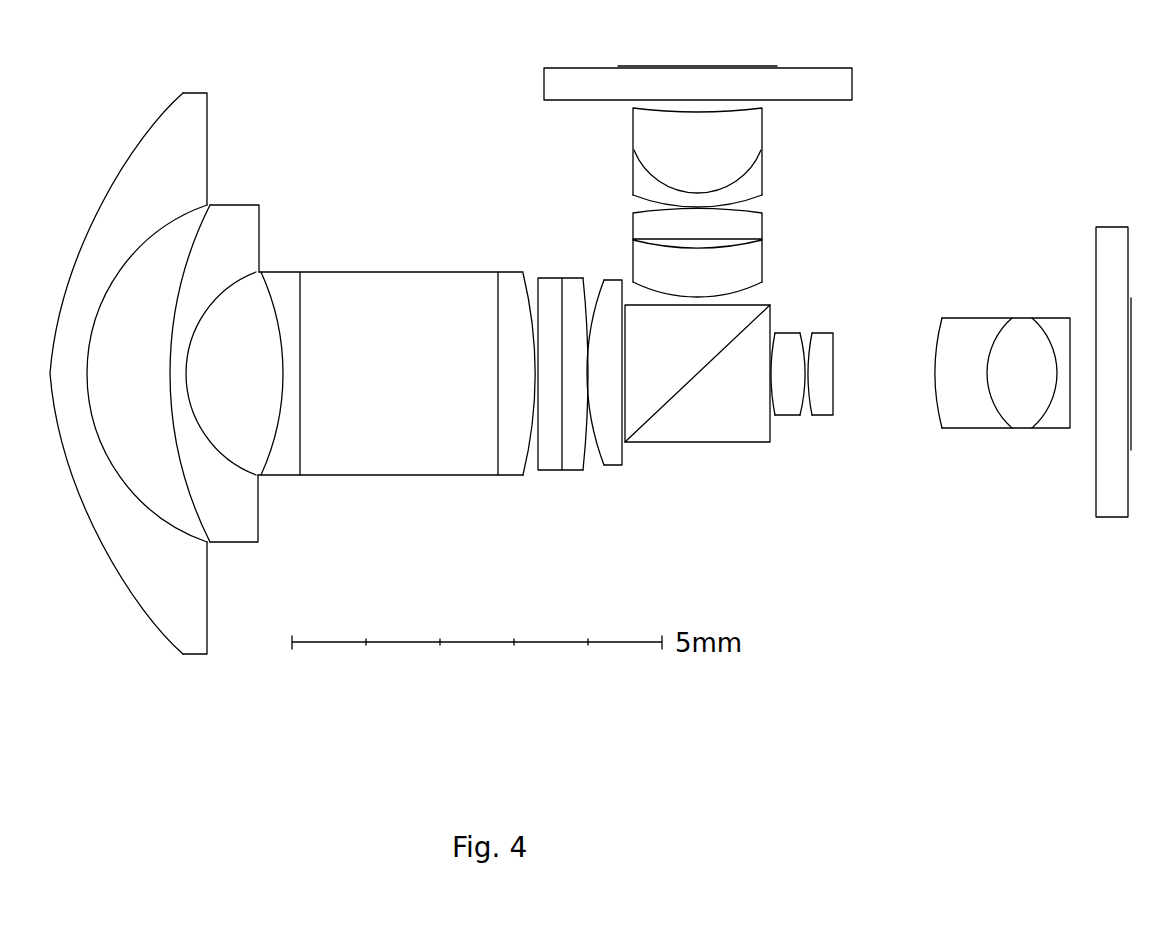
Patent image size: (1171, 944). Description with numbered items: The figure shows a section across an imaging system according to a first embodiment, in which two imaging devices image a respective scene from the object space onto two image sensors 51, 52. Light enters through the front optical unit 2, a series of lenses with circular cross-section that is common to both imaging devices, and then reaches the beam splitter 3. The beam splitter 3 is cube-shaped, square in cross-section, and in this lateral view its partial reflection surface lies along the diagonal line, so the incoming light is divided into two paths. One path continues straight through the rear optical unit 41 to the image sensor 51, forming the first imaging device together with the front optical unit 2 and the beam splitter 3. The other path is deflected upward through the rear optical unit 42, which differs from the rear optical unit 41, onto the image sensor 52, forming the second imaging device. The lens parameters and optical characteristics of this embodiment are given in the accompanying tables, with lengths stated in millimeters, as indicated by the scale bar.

The front optical unit 2 is at (625, 710).
The beam splitter 3 is at (697, 373).
The rear optical unit 41 is at (1126, 712).
The rear optical unit 42 is at (902, 72).
The image sensor 51 is at (1132, 372).
The image sensor 52 is at (698, 65).